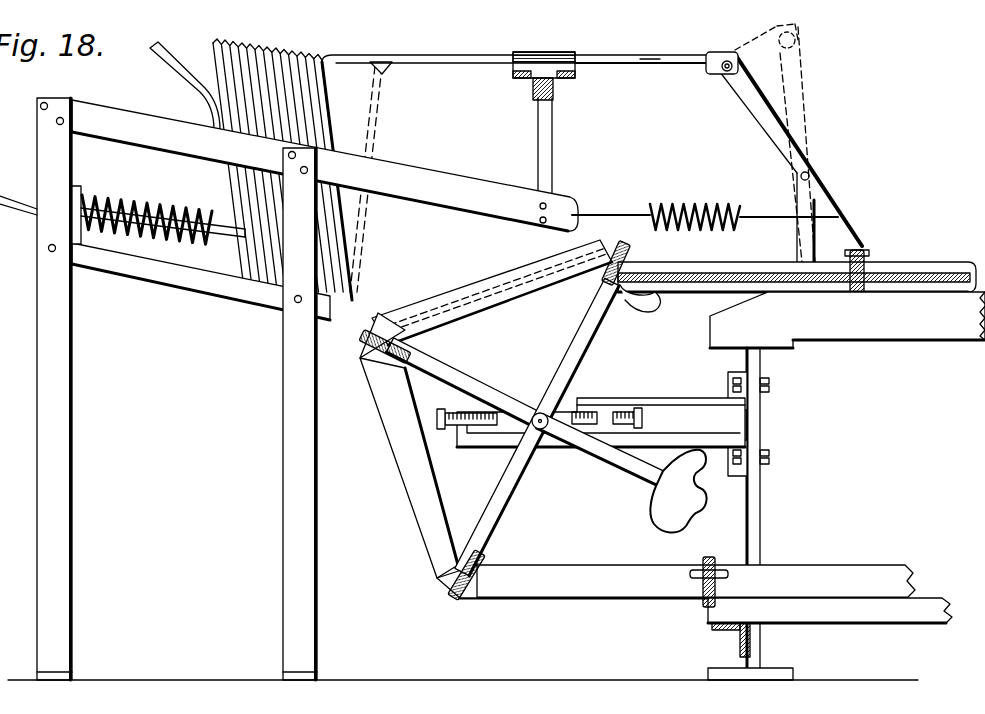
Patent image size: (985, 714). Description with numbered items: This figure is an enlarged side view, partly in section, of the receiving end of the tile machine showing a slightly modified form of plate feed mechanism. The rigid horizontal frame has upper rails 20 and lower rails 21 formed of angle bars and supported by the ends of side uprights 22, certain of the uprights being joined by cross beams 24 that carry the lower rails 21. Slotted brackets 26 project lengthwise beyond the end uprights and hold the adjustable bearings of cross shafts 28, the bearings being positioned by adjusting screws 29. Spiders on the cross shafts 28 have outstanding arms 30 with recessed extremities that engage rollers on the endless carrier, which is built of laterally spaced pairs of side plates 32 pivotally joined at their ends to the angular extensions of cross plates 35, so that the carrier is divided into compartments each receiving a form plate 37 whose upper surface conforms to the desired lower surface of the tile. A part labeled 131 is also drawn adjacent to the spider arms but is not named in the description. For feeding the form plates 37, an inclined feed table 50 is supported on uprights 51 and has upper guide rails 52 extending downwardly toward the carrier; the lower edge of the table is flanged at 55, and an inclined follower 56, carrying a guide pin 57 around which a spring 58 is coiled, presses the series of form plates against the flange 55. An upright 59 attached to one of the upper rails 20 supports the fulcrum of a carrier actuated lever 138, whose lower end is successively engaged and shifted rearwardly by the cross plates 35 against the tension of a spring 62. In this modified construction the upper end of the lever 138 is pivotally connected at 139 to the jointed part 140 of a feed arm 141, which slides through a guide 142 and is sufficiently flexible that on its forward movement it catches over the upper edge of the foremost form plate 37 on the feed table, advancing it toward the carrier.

The upper rails 20 is at (875, 328).
The lower rails 21 is at (805, 613).
The side uprights 22 is at (760, 482).
The cross beams 24 is at (718, 630).
The slotted brackets 26 is at (590, 398).
The cross shafts 28 is at (543, 425).
The adjusting screws 29 is at (440, 429).
The spider arms 30 is at (563, 370).
The side plates 32 is at (468, 290).
The cross plates 35 is at (873, 253).
The form plates 37 is at (245, 67).
The feed table 50 is at (190, 280).
The uprights 51 is at (62, 300).
The guide rails 52 is at (142, 135).
The flange 55 is at (357, 300).
The follower 56 is at (232, 197).
The guide pin 57 is at (5, 193).
The spring 58 is at (127, 213).
The upright 59 is at (800, 248).
The spring 62 is at (683, 208).
The cam segment 131 is at (678, 514).
The carrier actuated lever 138 is at (767, 128).
The pivotal connection 139 is at (727, 72).
The jointed part 140 is at (647, 65).
The feed arm 141 is at (450, 62).
The guide 142 is at (545, 52).